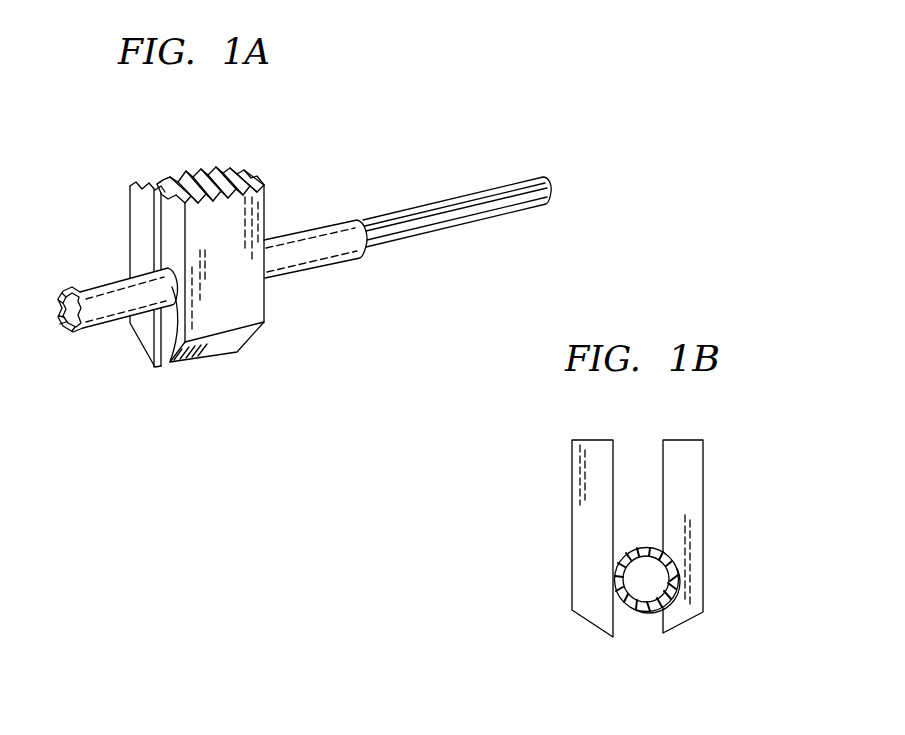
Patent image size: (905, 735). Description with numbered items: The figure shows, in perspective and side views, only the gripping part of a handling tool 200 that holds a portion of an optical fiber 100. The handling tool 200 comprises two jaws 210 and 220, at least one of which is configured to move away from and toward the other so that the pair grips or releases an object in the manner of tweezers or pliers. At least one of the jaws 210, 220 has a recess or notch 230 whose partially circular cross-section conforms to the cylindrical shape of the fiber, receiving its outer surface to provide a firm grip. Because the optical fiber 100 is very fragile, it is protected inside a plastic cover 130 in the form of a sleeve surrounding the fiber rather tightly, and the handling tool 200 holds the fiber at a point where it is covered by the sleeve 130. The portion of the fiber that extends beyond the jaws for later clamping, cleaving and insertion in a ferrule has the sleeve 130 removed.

In FIG. 1A, the optical fiber 100 is at (465, 202).
In FIG. 1B, the optical fiber 100 is at (642, 568).
In FIG. 1A, the plastic cover 130 is at (317, 228).
In FIG. 1B, the plastic cover 130 is at (648, 612).
In FIG. 1A, the handling tool 200 is at (270, 137).
In FIG. 1B, the handling tool 200 is at (733, 422).
In FIG. 1A, the jaw 210 is at (137, 214).
In FIG. 1B, the jaw 210 is at (578, 541).
In FIG. 1A, the jaw 220 is at (257, 305).
In FIG. 1B, the jaw 220 is at (697, 467).
In FIG. 1A, the recess or notch 230 is at (170, 362).
In FIG. 1B, the recess or notch 230 is at (683, 580).